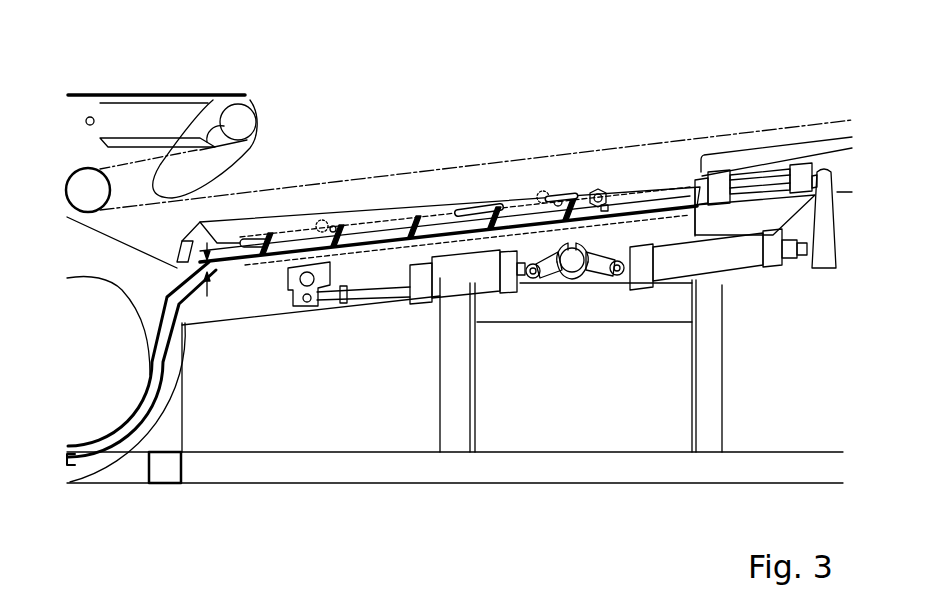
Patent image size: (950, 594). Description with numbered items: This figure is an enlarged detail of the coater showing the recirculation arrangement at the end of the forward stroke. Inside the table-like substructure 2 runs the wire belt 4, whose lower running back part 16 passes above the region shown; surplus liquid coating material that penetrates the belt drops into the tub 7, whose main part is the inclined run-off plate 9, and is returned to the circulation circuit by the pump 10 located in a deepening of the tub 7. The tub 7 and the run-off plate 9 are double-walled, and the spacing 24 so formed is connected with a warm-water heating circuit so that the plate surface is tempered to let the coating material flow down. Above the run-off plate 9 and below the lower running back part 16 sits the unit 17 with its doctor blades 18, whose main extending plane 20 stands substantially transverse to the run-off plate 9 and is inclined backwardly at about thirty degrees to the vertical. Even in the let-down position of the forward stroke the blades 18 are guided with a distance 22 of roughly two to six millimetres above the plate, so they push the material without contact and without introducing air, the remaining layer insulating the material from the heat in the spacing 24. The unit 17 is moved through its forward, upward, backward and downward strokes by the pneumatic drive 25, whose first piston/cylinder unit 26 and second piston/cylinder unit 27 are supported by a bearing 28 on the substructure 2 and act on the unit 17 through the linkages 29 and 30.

The substructure 2 is at (279, 424).
The wire belt 4 is at (78, 94).
The tub 7 is at (104, 456).
The run-off plate 9 is at (374, 225).
The pump 10 is at (88, 423).
The lower running back part of the wire belt 16 is at (732, 134).
The unit 17 is at (332, 205).
The doctor blades 18 is at (445, 225).
The main extending plane 20 is at (570, 205).
The distance 22 is at (183, 275).
The spacing 24 is at (148, 398).
The pneumatic drive 25 is at (748, 285).
The first piston/cylinder unit 26 is at (687, 262).
The second piston/cylinder unit 27 is at (455, 283).
The bearing 28 is at (571, 277).
The linkage 29 is at (643, 196).
The linkage 30 is at (366, 289).